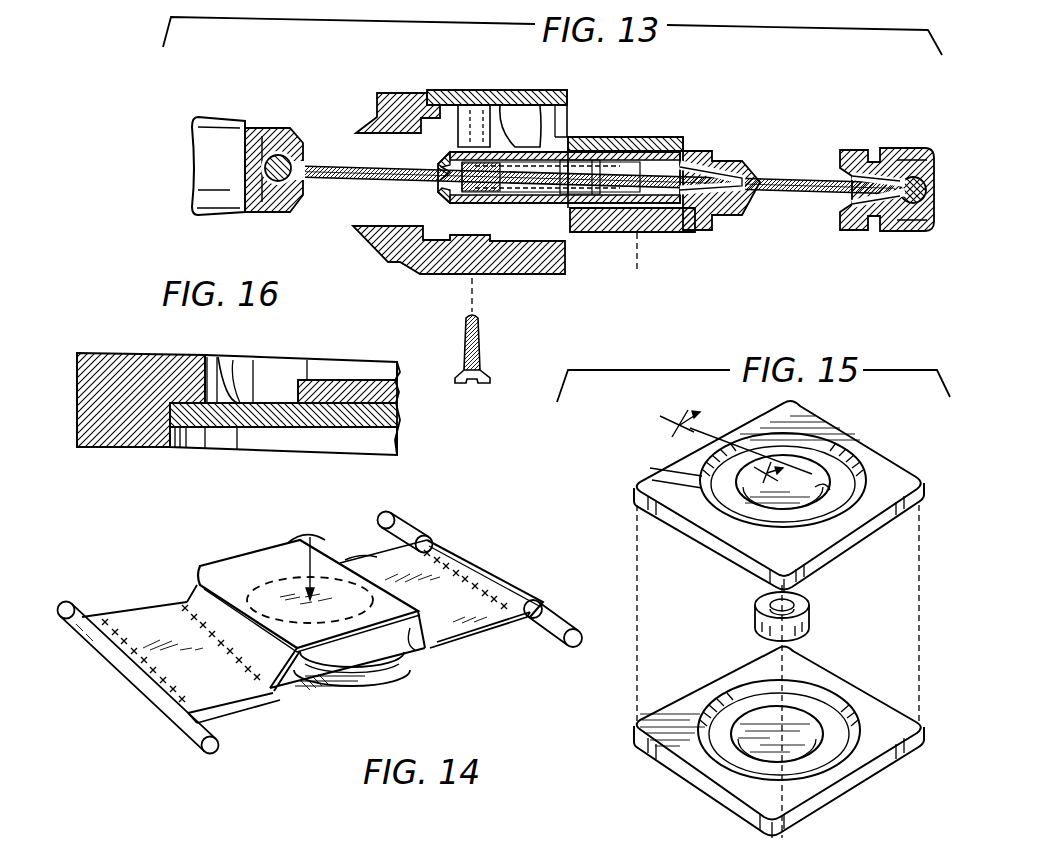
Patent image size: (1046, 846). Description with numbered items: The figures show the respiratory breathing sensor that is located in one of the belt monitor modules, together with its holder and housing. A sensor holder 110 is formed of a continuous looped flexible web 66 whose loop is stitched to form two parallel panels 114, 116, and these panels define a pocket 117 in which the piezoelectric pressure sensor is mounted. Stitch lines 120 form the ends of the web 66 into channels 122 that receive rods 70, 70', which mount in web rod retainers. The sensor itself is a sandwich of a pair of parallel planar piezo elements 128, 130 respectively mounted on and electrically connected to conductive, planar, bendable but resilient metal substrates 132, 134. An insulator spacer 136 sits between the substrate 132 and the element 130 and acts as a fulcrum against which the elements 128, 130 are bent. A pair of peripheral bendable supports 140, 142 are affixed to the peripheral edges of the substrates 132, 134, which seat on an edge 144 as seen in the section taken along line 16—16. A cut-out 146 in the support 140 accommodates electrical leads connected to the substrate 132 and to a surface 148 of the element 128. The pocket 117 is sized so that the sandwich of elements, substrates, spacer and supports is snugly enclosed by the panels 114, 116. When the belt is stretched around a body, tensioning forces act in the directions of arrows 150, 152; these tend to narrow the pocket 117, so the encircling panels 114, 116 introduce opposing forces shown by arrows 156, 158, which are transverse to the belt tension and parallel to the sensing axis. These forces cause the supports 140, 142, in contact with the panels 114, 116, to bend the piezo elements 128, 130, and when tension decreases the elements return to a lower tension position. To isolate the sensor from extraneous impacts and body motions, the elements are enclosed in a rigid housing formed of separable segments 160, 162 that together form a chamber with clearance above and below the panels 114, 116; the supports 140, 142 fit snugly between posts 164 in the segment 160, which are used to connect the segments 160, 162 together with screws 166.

In FIG. 13, the flexible web 66 is at (806, 194).
In FIG. 14, the flexible web 66 is at (377, 557).
In FIG. 13, the rod 70 is at (257, 176).
In FIG. 14, the rod 70 is at (189, 776).
In FIG. 13, the rod 70' is at (910, 164).
In FIG. 14, the rod 70' is at (421, 519).
In FIG. 13, the sensor holder 110 is at (756, 166).
In FIG. 14, the sensor holder 110 is at (162, 590).
In FIG. 13, the panel 114 is at (518, 123).
In FIG. 14, the panel 114 is at (343, 563).
In FIG. 13, the panel 116 is at (440, 182).
In FIG. 14, the panel 116 is at (428, 653).
In FIG. 13, the pocket 117 is at (437, 168).
In FIG. 13, the stitch line 120 is at (883, 148).
In FIG. 14, the stitch line 120 is at (123, 637).
In FIG. 13, the pin 122 is at (302, 158).
In FIG. 14, the pin 122 is at (180, 717).
In FIG. 13, the piezo element 128 is at (537, 123).
In FIG. 16, the piezo element 128 is at (340, 392).
In FIG. 15, the piezo element 128 is at (732, 508).
In FIG. 13, the piezo element 130 is at (508, 203).
In FIG. 15, the piezo element 130 is at (803, 753).
In FIG. 14, the piezo element 130 is at (352, 680).
In FIG. 13, the metal substrate 132 is at (462, 152).
In FIG. 16, the metal substrate 132 is at (277, 420).
In FIG. 15, the metal substrate 132 is at (783, 508).
In FIG. 14, the metal substrate 132 is at (349, 669).
In FIG. 13, the metal substrate 134 is at (470, 205).
In FIG. 15, the metal substrate 134 is at (840, 745).
In FIG. 13, the insulator spacer 136 is at (588, 153).
In FIG. 15, the insulator spacer 136 is at (810, 620).
In FIG. 13, the peripheral bendable support 140 is at (687, 150).
In FIG. 16, the peripheral bendable support 140 is at (110, 358).
In FIG. 15, the peripheral bendable support 140 is at (863, 540).
In FIG. 14, the peripheral bendable support 140 is at (408, 645).
In FIG. 13, the peripheral bendable support 142 is at (674, 212).
In FIG. 15, the peripheral bendable support 142 is at (673, 775).
In FIG. 14, the peripheral bendable support 142 is at (367, 690).
In FIG. 16, the edge 144 is at (200, 413).
In FIG. 15, the cut-out 146 is at (650, 468).
In FIG. 15, the surface 148 is at (823, 492).
In FIG. 14, the arrow 150 is at (95, 686).
In FIG. 14, the arrow 152 is at (572, 555).
In FIG. 14, the arrow 156 is at (290, 545).
In FIG. 14, the arrow 158 is at (310, 708).
In FIG. 13, the housing segment 160 is at (657, 133).
In FIG. 13, the housing segment 162 is at (437, 276).
In FIG. 13, the post 164 is at (457, 123).
In FIG. 13, the screw 166 is at (486, 345).
In FIG. 15, the section line 16 is at (736, 443).